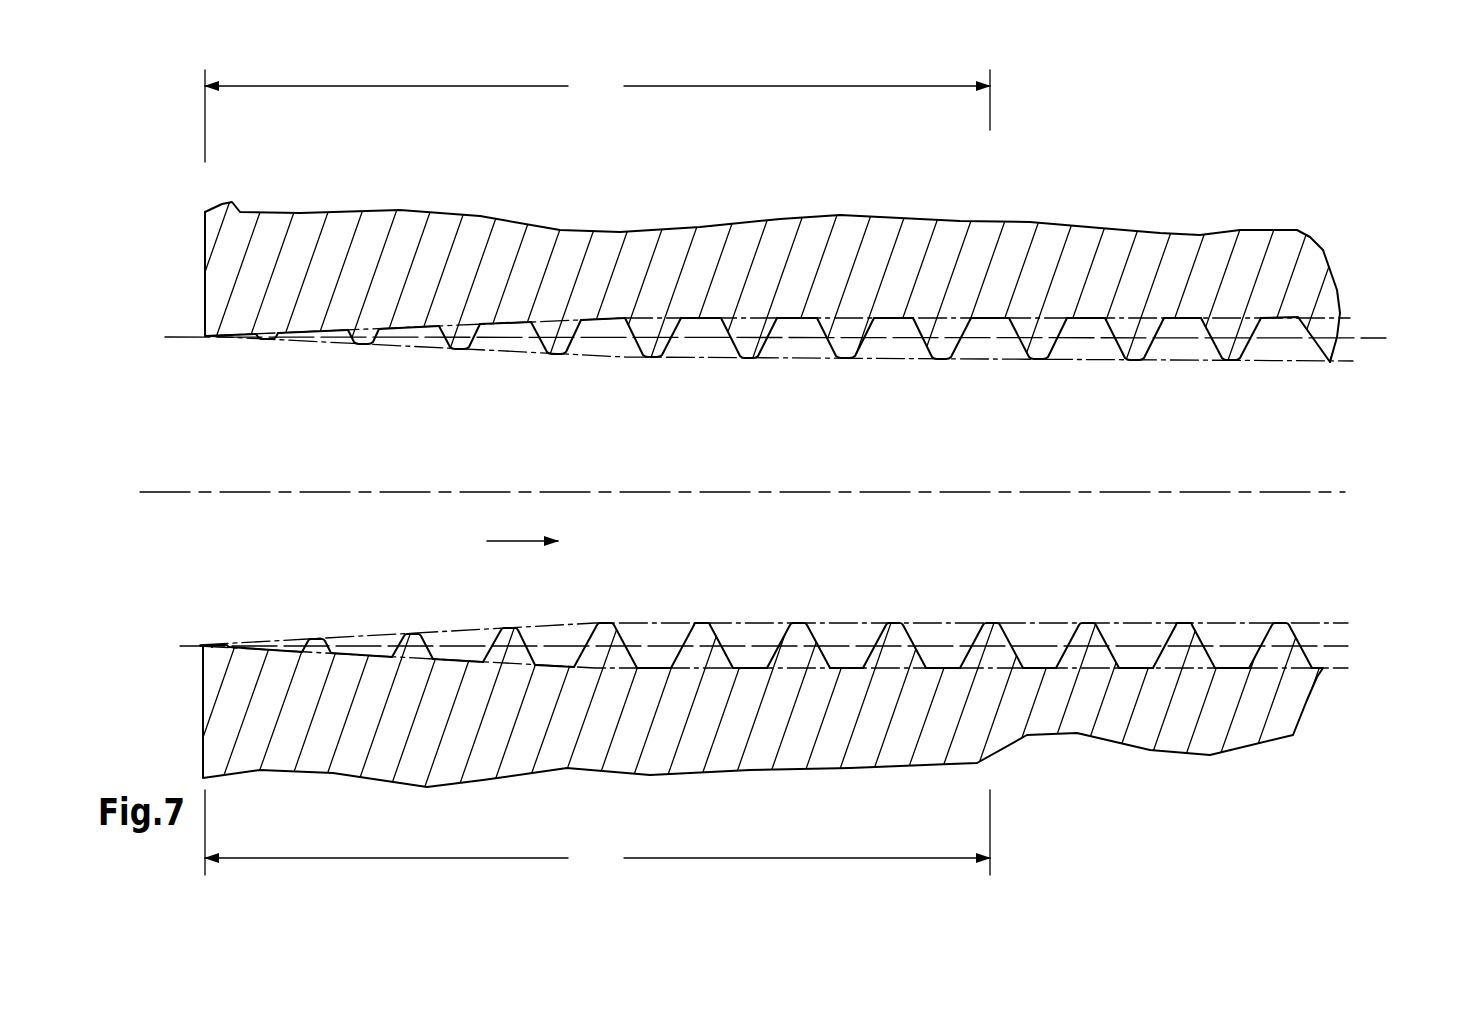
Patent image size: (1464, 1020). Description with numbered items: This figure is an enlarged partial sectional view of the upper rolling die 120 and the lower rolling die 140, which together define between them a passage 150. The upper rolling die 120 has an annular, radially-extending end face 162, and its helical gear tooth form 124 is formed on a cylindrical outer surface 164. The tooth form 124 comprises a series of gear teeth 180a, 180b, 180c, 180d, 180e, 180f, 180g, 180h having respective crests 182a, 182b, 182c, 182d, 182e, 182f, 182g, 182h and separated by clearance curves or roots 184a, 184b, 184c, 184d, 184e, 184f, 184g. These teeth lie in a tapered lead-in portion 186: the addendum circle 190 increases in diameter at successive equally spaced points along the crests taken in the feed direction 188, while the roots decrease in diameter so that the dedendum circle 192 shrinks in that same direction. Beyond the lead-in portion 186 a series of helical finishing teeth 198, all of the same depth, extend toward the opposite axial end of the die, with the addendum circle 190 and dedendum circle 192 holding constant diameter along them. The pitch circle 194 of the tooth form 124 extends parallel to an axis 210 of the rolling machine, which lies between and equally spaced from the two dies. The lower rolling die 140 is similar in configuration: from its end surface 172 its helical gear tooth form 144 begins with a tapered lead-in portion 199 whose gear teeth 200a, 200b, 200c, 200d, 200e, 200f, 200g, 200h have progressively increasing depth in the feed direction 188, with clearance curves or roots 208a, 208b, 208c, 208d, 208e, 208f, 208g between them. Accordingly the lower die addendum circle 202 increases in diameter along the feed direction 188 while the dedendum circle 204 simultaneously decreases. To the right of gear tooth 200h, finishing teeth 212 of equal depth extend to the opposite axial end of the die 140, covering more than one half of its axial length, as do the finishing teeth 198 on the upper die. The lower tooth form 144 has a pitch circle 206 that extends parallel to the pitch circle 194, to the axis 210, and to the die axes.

The upper rolling die 120 is at (1220, 228).
The helical gear tooth form 124 is at (203, 377).
The lower rolling die 140 is at (1141, 757).
The helical gear tooth form 144 is at (198, 623).
The passage 150 is at (1064, 469).
The end face 162 is at (203, 238).
The cylindrical outer surface 164 is at (218, 335).
The end surface 172 is at (203, 678).
The gear tooth 180a is at (268, 328).
The gear tooth 180b is at (362, 322).
The gear tooth 180c is at (456, 320).
The gear tooth 180d is at (552, 318).
The gear tooth 180e is at (653, 316).
The gear tooth 180f is at (747, 316).
The gear tooth 180g is at (842, 316).
The gear tooth 180h is at (938, 316).
The crest 182a is at (268, 345).
The crest 182b is at (363, 346).
The crest 182c is at (457, 351).
The crest 182d is at (557, 356).
The crest 182e is at (655, 360).
The crest 182f is at (750, 360).
The crest 182g is at (847, 362).
The crest 182h is at (943, 362).
The clearance curve or root 184a is at (310, 340).
The clearance curve or root 184b is at (408, 337).
The clearance curve or root 184c is at (502, 335).
The clearance curve or root 184d is at (600, 323).
The clearance curve or root 184e is at (698, 320).
The clearance curve or root 184f is at (790, 320).
The clearance curve or root 184g is at (890, 325).
The tapered lead-in portion 186 is at (597, 116).
The feed direction 188 is at (508, 541).
The addendum circle 190 is at (1338, 365).
The dedendum circle 192 is at (1350, 317).
The pitch circle 194 is at (1386, 338).
The finishing teeth 198 is at (1037, 362).
The tapered lead-in portion 199 is at (597, 832).
The gear tooth 200a is at (216, 637).
The gear tooth 200b is at (311, 636).
The gear tooth 200c is at (406, 632).
The gear tooth 200d is at (502, 628).
The gear tooth 200e is at (600, 623).
The gear tooth 200f is at (696, 623).
The gear tooth 200g is at (794, 623).
The gear tooth 200h is at (890, 623).
The addendum circle 202 is at (1348, 623).
The dedendum circle 204 is at (1343, 670).
The pitch circle 206 is at (1347, 648).
The clearance curve or root 208a is at (263, 648).
The clearance curve or root 208b is at (366, 645).
The clearance curve or root 208c is at (463, 648).
The clearance curve or root 208d is at (556, 652).
The clearance curve or root 208e is at (652, 656).
The clearance curve or root 208f is at (750, 660).
The clearance curve or root 208g is at (843, 665).
The axis of the rolling machine 210 is at (173, 493).
The finishing teeth 212 is at (1282, 622).